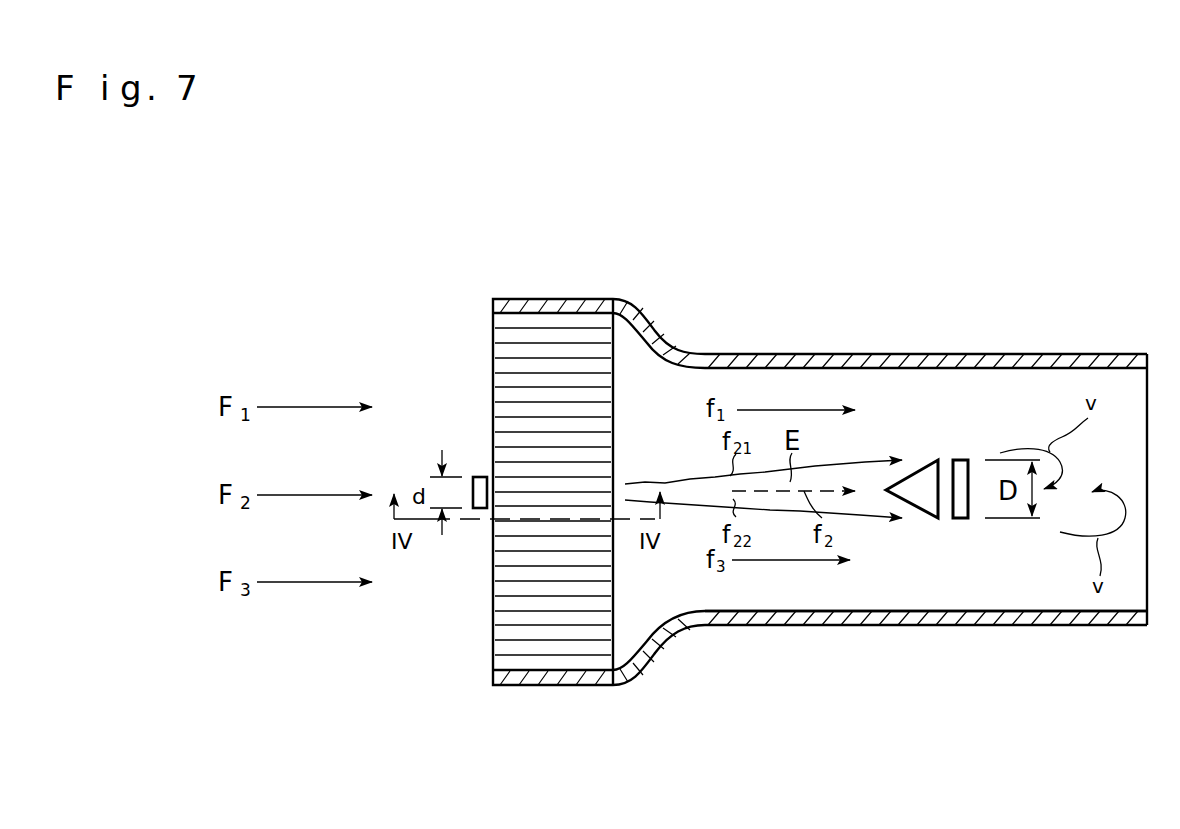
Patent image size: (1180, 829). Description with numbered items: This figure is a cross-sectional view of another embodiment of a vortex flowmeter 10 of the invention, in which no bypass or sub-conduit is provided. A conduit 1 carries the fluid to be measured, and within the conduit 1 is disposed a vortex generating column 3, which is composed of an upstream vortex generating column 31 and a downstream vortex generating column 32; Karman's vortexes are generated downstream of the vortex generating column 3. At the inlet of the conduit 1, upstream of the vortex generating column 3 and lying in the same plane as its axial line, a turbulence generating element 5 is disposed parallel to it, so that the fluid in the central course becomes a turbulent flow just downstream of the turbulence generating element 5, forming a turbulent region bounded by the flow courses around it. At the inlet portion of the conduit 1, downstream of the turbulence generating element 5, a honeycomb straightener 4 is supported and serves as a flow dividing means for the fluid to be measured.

The conduit 1 is at (780, 354).
The vortex generating column 3 is at (952, 595).
The honeycomb straightener 4 is at (512, 373).
The turbulence generating element 5 is at (481, 509).
The vortex flowmeter 10 is at (716, 640).
The upstream vortex generating column 31 is at (930, 522).
The downstream vortex generating column 32 is at (970, 522).